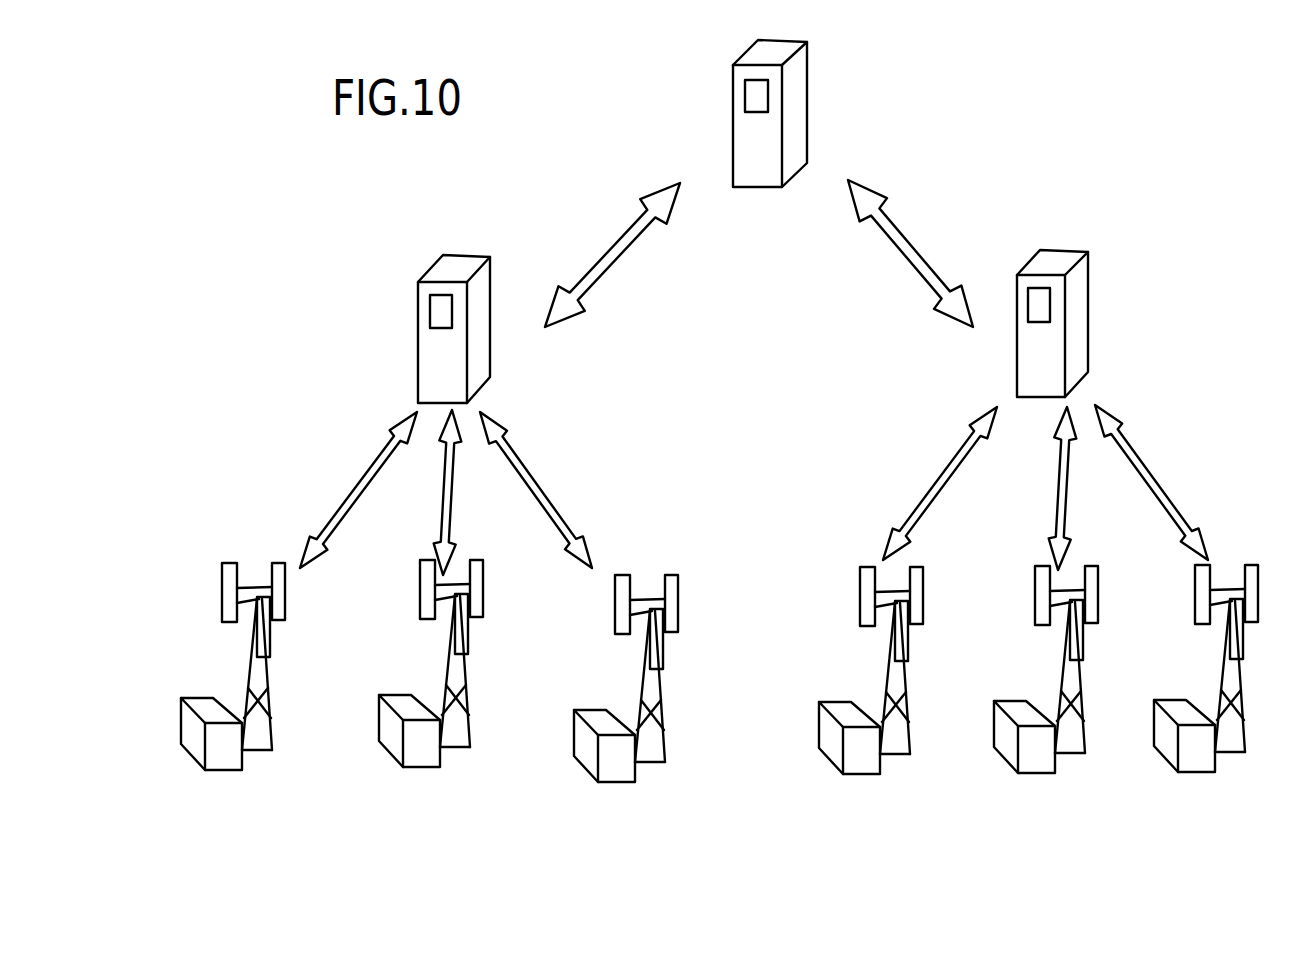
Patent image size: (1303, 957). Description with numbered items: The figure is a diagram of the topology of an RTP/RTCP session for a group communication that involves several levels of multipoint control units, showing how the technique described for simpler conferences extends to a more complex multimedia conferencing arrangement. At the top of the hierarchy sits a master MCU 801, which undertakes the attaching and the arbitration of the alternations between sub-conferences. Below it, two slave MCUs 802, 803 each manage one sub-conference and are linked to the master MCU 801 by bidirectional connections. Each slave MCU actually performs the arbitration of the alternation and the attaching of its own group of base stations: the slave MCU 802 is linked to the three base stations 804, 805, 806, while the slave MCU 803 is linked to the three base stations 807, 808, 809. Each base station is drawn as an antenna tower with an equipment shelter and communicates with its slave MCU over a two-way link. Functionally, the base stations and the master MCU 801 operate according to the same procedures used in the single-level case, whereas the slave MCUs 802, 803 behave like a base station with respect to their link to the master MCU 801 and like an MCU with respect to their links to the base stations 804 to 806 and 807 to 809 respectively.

The master MCU 801 is at (807, 78).
The slave MCU 802 is at (418, 340).
The slave MCU 803 is at (1090, 332).
The base station 804 is at (233, 698).
The base station 805 is at (431, 696).
The base station 806 is at (626, 710).
The base station 807 is at (871, 703).
The base station 808 is at (1055, 702).
The base station 809 is at (1218, 701).